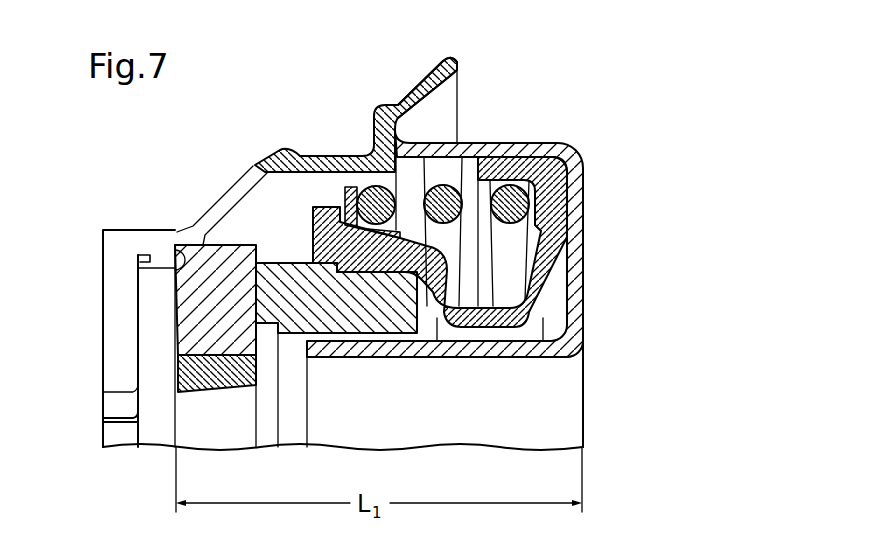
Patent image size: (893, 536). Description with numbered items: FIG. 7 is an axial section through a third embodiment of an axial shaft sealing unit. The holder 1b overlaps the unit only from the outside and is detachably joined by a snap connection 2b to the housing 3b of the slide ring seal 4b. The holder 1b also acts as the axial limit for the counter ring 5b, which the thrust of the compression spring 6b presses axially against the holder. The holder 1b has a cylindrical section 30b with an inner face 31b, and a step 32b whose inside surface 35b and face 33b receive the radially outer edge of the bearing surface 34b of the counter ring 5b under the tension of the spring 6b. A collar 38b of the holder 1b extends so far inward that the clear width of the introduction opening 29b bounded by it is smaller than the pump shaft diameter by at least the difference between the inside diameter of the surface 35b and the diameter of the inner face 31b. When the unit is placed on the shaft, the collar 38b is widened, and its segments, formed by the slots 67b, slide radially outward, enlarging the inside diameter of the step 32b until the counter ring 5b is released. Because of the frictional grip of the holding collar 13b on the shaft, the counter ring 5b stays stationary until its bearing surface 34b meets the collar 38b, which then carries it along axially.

The holder 1b is at (270, 128).
The snap connection 2b is at (392, 86).
The housing 3b is at (513, 143).
The slide ring seal 4b is at (580, 142).
The counter ring 5b is at (207, 316).
The compression spring 6b is at (445, 195).
The holding collar 13b is at (213, 392).
The introduction opening 29b is at (115, 438).
The cylindrical section 30b is at (147, 238).
The inner face 31b is at (148, 259).
The step 32b is at (185, 237).
The face 33b is at (173, 266).
The bearing surface 34b is at (173, 298).
The surface 35b is at (192, 230).
The collar 38b is at (127, 362).
The slots 67b is at (103, 418).